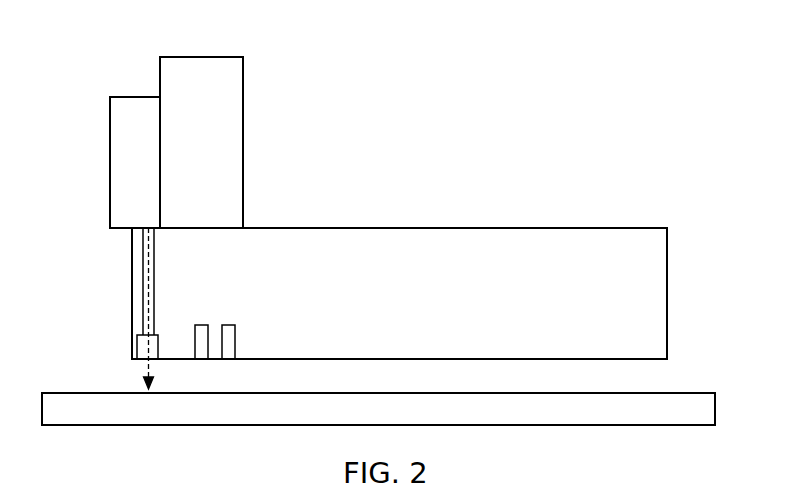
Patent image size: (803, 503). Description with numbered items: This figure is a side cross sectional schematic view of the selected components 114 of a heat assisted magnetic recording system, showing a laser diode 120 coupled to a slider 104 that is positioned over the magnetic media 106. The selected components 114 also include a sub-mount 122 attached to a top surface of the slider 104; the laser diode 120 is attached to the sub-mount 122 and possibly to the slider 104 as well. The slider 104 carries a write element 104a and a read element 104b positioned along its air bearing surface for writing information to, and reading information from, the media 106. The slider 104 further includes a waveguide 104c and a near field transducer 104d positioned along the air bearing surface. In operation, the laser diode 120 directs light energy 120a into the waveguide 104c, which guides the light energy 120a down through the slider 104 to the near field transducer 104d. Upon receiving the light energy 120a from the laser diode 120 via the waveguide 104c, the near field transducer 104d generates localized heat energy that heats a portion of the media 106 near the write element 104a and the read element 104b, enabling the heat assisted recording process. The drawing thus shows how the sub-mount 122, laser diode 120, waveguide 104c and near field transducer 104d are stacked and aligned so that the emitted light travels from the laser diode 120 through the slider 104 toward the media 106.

The selected components of the HAMR system 114 is at (528, 86).
The slider 104 is at (417, 317).
The write element 104a is at (202, 325).
The read element 104b is at (237, 346).
The waveguide 104c is at (155, 247).
The near field transducer 104d is at (160, 338).
The magnetic media 106 is at (440, 420).
The laser diode 120 is at (132, 95).
The light energy 120a is at (147, 252).
The sub-mount 122 is at (222, 56).